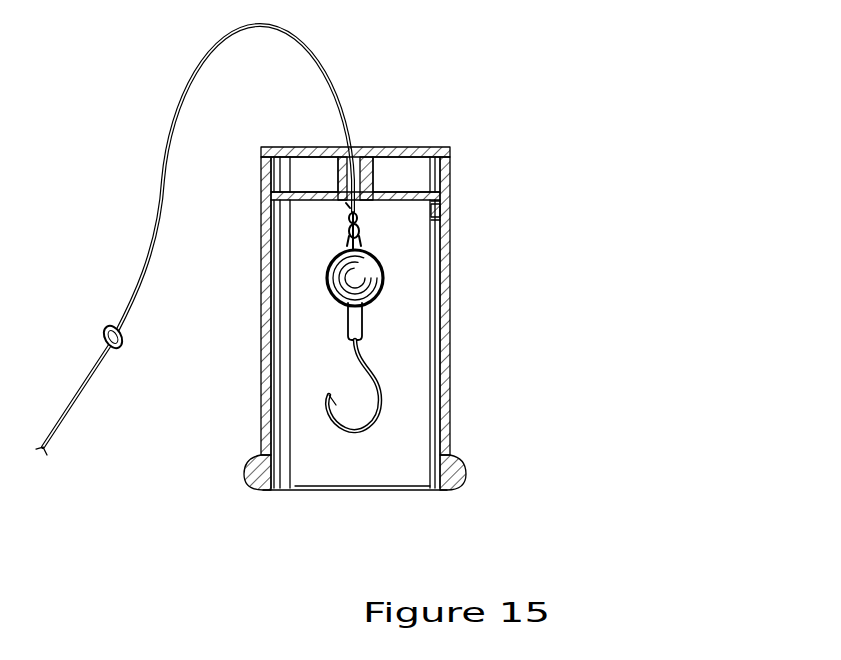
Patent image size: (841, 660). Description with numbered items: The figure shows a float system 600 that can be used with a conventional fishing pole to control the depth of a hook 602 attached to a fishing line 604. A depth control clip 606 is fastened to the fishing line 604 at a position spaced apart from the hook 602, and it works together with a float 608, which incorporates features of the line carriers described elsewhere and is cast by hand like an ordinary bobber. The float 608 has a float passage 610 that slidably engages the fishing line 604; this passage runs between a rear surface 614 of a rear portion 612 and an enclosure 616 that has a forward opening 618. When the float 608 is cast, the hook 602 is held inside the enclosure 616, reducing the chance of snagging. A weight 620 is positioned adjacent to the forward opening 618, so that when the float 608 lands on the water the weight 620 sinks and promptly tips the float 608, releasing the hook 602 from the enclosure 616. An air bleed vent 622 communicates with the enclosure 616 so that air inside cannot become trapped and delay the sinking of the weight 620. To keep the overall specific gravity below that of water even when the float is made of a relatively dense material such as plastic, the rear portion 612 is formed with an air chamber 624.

The float system 600 is at (582, 70).
The hook 602 is at (347, 282).
The fishing line 604 is at (153, 173).
The depth control clip 606 is at (118, 348).
The float 608 is at (497, 300).
The float passage 610 is at (360, 150).
The rear portion 612 is at (437, 142).
The rear surface 614 is at (308, 147).
The enclosure 616 is at (415, 395).
The forward opening 618 is at (405, 478).
The weight 620 is at (457, 477).
The air bleed vent 622 is at (445, 210).
The air chamber 624 is at (424, 172).